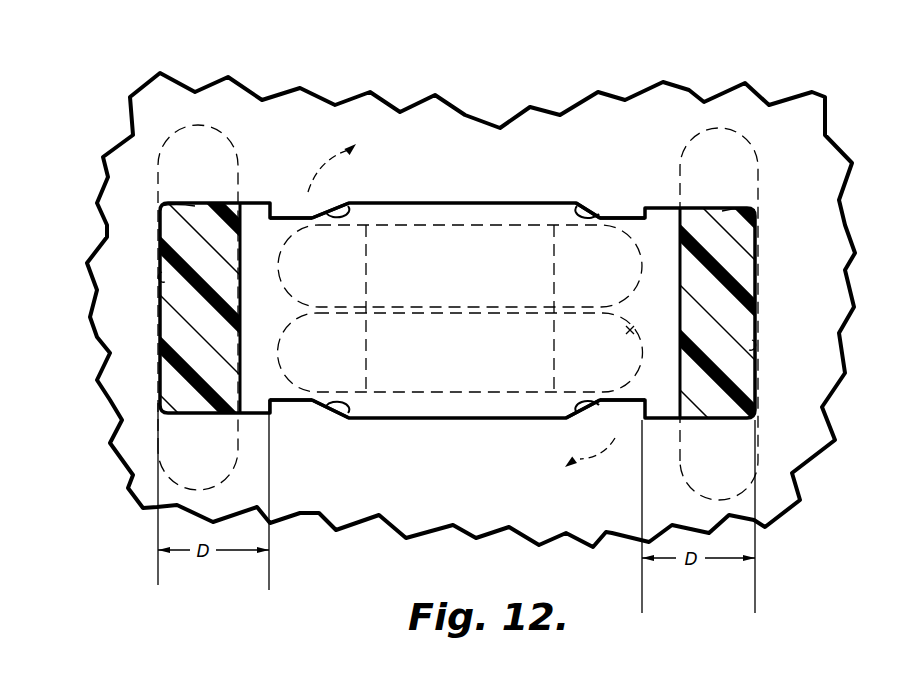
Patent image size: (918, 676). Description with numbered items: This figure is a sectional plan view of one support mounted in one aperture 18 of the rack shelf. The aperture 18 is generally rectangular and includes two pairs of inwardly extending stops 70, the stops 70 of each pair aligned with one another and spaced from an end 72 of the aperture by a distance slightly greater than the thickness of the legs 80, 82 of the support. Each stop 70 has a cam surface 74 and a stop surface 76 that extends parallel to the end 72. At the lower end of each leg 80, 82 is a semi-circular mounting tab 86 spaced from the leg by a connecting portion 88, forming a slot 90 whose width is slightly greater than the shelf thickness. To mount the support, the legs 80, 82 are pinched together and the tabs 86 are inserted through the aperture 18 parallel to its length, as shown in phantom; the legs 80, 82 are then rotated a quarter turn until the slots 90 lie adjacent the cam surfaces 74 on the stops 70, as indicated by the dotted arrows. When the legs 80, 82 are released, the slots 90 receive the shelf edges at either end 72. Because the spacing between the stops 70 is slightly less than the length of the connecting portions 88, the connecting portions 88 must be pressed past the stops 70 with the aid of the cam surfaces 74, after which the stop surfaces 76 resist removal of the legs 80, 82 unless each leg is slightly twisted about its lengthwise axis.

The aperture 18 is at (528, 200).
The stop 70 is at (286, 207).
The end 72 is at (162, 272).
The cam surface 74 is at (343, 207).
The stop surface 76 is at (270, 216).
The leg 80 is at (441, 262).
The leg 82 is at (207, 125).
The mounting tab 86 is at (168, 162).
The connecting portion 88 is at (163, 337).
The slot 90 is at (195, 206).